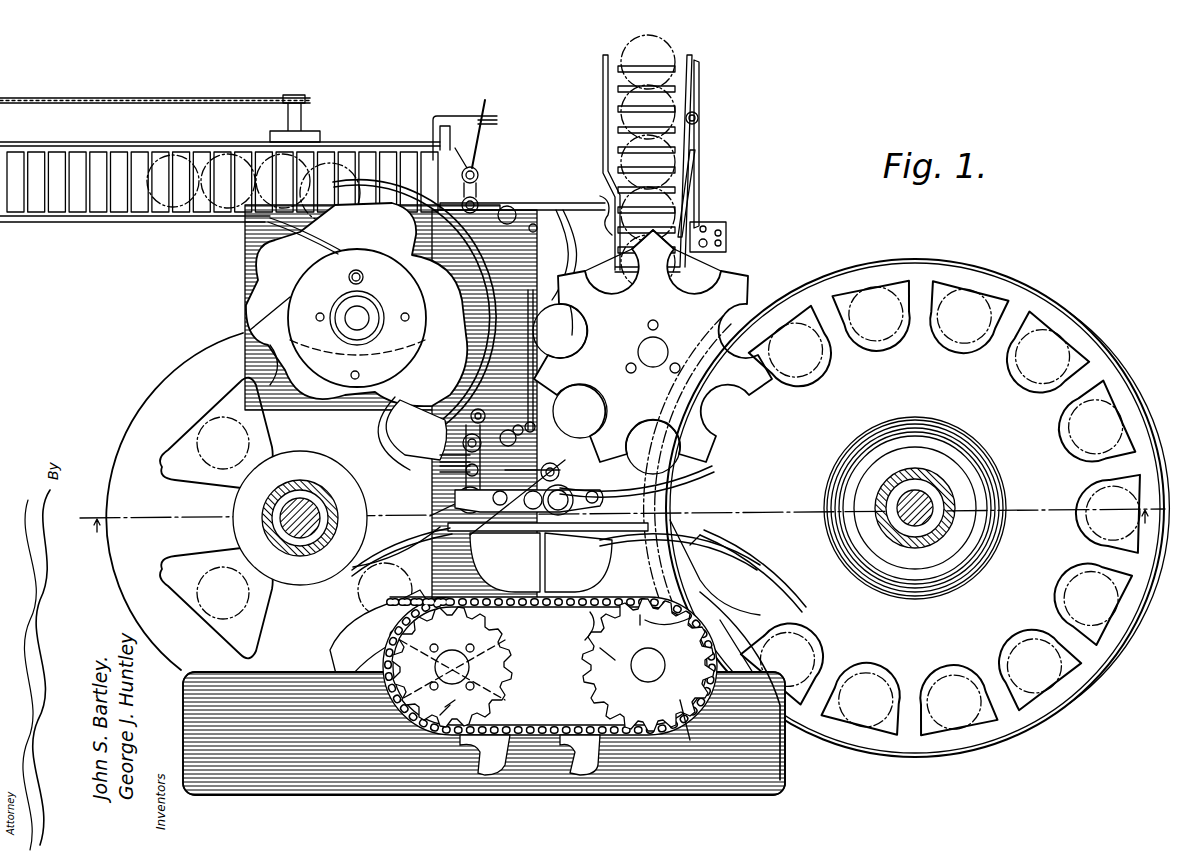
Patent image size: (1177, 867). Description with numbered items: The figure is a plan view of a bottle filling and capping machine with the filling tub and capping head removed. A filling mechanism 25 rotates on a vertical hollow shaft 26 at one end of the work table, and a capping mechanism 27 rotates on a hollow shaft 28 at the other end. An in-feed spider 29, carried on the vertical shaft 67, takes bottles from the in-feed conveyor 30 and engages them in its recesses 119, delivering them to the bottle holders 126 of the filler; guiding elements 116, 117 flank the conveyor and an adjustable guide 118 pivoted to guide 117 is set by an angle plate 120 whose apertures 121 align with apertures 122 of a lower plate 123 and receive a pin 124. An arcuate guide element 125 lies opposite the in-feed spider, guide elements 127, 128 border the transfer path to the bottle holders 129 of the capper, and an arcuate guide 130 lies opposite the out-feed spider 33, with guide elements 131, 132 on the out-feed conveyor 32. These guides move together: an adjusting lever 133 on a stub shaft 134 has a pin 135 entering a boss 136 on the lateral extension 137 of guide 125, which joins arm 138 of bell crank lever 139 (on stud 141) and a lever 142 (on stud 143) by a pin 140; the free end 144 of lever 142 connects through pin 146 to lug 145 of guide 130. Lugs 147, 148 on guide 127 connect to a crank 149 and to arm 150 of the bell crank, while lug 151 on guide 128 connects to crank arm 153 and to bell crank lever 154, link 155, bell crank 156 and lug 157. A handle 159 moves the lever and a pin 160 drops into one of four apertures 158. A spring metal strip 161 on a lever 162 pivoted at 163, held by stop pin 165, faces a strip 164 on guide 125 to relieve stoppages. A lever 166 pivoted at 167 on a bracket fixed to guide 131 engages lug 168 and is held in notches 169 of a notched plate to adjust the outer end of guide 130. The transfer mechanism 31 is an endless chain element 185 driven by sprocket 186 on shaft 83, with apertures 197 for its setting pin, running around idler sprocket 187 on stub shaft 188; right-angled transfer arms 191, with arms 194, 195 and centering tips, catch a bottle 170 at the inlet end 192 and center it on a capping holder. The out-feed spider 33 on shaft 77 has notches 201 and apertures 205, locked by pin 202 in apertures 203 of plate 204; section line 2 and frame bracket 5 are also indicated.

The section line 2 is at (621, 531).
The frame bracket 5 is at (560, 660).
The filling mechanism 25 is at (917, 494).
The vertical hollow shaft 26 is at (922, 468).
The capping mechanism 27 is at (217, 501).
The vertical rotating hollow shaft 28 is at (300, 496).
The in-feed spider 29 is at (652, 352).
The in-feed conveyor 30 is at (698, 114).
The transfer mechanism 31 is at (716, 700).
The out-feed conveyor 32 is at (110, 212).
The out-feed spider 33 is at (247, 297).
The vertically arranged shaft 67 is at (662, 345).
The driving shaft 77 is at (362, 320).
The vertically disposed shaft 83 is at (445, 707).
The guiding element 116 is at (604, 82).
The guiding element 117 is at (697, 92).
The adjustable guide 118 is at (695, 176).
The recesses 119 is at (645, 300).
The angle plate 120 is at (724, 226).
The apertures 121 is at (704, 225).
The apertures 122 is at (704, 248).
The lower plate 123 is at (722, 233).
The pin 124 is at (722, 245).
The arcuate guide element 125 is at (560, 331).
The bottle holders 126 is at (950, 278).
The guide element 127 is at (682, 520).
The guide element 128 is at (722, 543).
The bottle holders 129 is at (262, 628).
The arcuate guide 130 is at (476, 337).
The guide element 131 is at (220, 158).
The guide element 132 is at (158, 224).
The adjusting lever 133 is at (535, 441).
The vertical stub shaft 134 is at (560, 470).
The up-standing pin 135 is at (560, 474).
The boss 136 is at (567, 460).
The lateral extension 137 is at (605, 440).
The arm of bell crank lever 138 is at (458, 500).
The bell crank lever 139 is at (445, 512).
The pin 140 is at (465, 477).
The stud 141 is at (448, 552).
The lever 142 is at (458, 466).
The stud 143 is at (455, 447).
The free end of lever 144 is at (415, 424).
The lug 145 is at (455, 365).
The pin 146 is at (480, 412).
The lug 147 is at (598, 508).
The lug 148 is at (540, 562).
The crank 149 is at (628, 474).
The arm of bell crank lever 150 is at (498, 575).
The lug 151 is at (618, 650).
The crank arm 153 is at (570, 575).
The bell crank lever 154 is at (472, 672).
The link 155 is at (552, 640).
The bell crank 156 is at (603, 640).
The lug 157 is at (628, 625).
The apertures 158 is at (536, 410).
The handle 159 is at (537, 428).
The pin 160 is at (485, 417).
The spring metal strip 161 is at (590, 283).
The lever 162 is at (540, 204).
The pivot 163 is at (604, 198).
The spring metal strip 164 is at (552, 262).
The stop pin 165 is at (521, 231).
The lever 166 is at (498, 126).
The pivot 167 is at (479, 175).
The lug 168 is at (480, 205).
The notches 169 is at (475, 127).
The bottle 170 is at (385, 612).
The endless chain element 185 is at (636, 740).
The sprocket 186 is at (443, 710).
The idler sprocket 187 is at (650, 737).
The stub shaft 188 is at (667, 668).
The transfer arms 191 is at (360, 600).
The inlet end 192 is at (765, 598).
The arm 194 is at (652, 712).
The arm 195 is at (695, 770).
The apertures 197 is at (470, 690).
The notches 201 is at (262, 335).
The pin 202 is at (360, 274).
The apertures 203 is at (318, 324).
The plate 204 is at (270, 347).
The apertures 205 is at (320, 313).